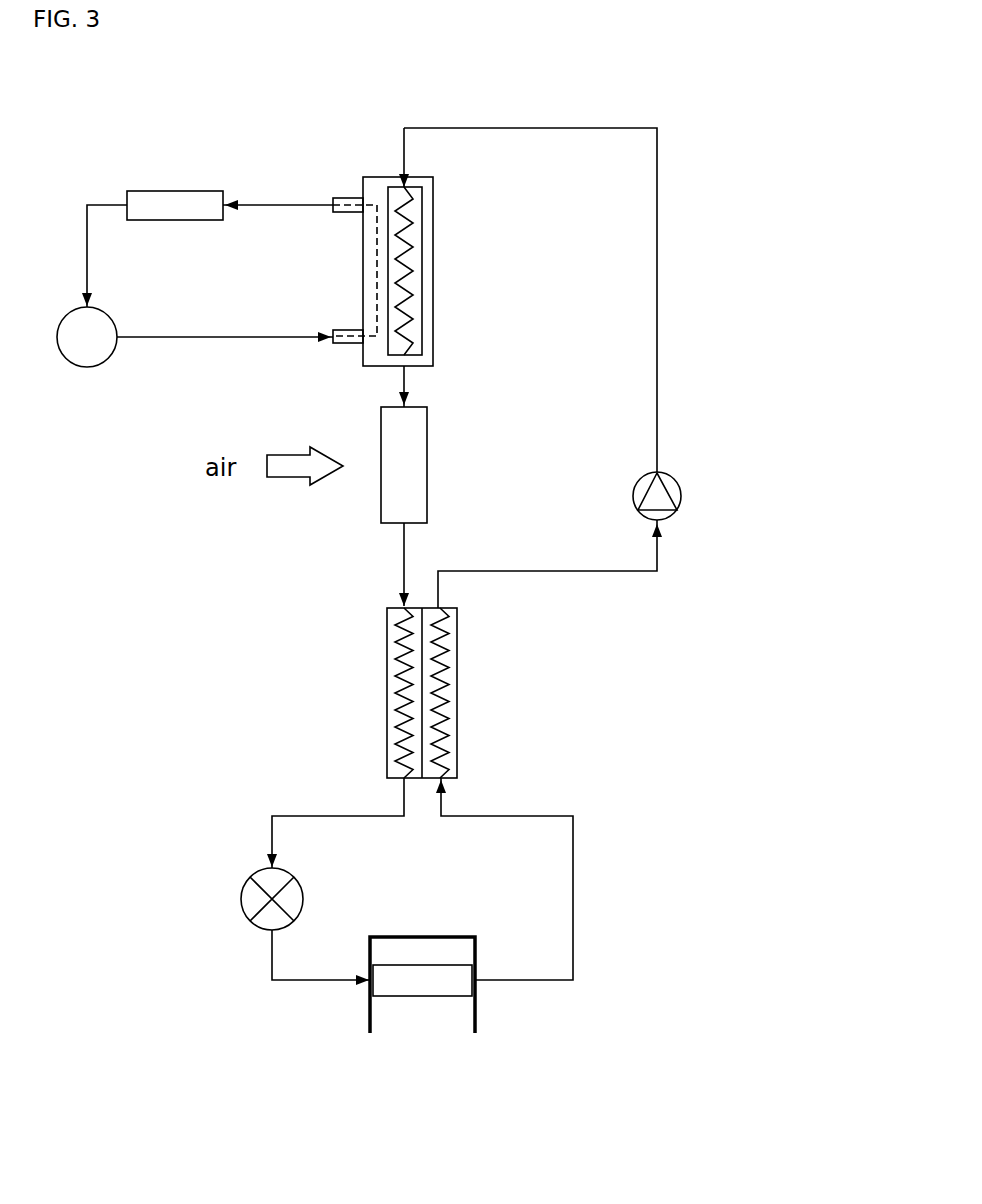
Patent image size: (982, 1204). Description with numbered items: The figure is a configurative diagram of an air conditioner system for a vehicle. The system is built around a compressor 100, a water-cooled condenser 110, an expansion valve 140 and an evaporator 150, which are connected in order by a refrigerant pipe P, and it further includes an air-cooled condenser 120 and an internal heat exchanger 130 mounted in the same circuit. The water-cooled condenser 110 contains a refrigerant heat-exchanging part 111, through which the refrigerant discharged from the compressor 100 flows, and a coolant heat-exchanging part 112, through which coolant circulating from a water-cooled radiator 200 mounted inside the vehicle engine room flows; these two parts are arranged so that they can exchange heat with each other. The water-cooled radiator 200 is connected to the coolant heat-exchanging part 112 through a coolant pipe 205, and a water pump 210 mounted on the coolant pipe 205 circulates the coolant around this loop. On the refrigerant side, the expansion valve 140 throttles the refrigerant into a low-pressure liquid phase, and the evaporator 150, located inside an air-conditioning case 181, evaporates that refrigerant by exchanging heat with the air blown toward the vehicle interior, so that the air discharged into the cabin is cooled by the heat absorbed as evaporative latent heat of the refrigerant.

The water-cooled condenser 110 is at (381, 170).
The refrigerant heat-exchanging part 111 is at (423, 272).
The coolant heat-exchanging part 112 is at (363, 178).
The air-cooled condenser 120 is at (389, 524).
The internal heat exchanger 130 is at (387, 696).
The expansion valve 140 is at (241, 897).
The evaporator 150 is at (422, 997).
The air-conditioning case 181 is at (477, 1018).
The water-cooled radiator 200 is at (174, 190).
The coolant pipe 205 is at (195, 338).
The water pump 210 is at (87, 366).
The compressor 100 is at (676, 482).
The refrigerant pipe P is at (658, 298).